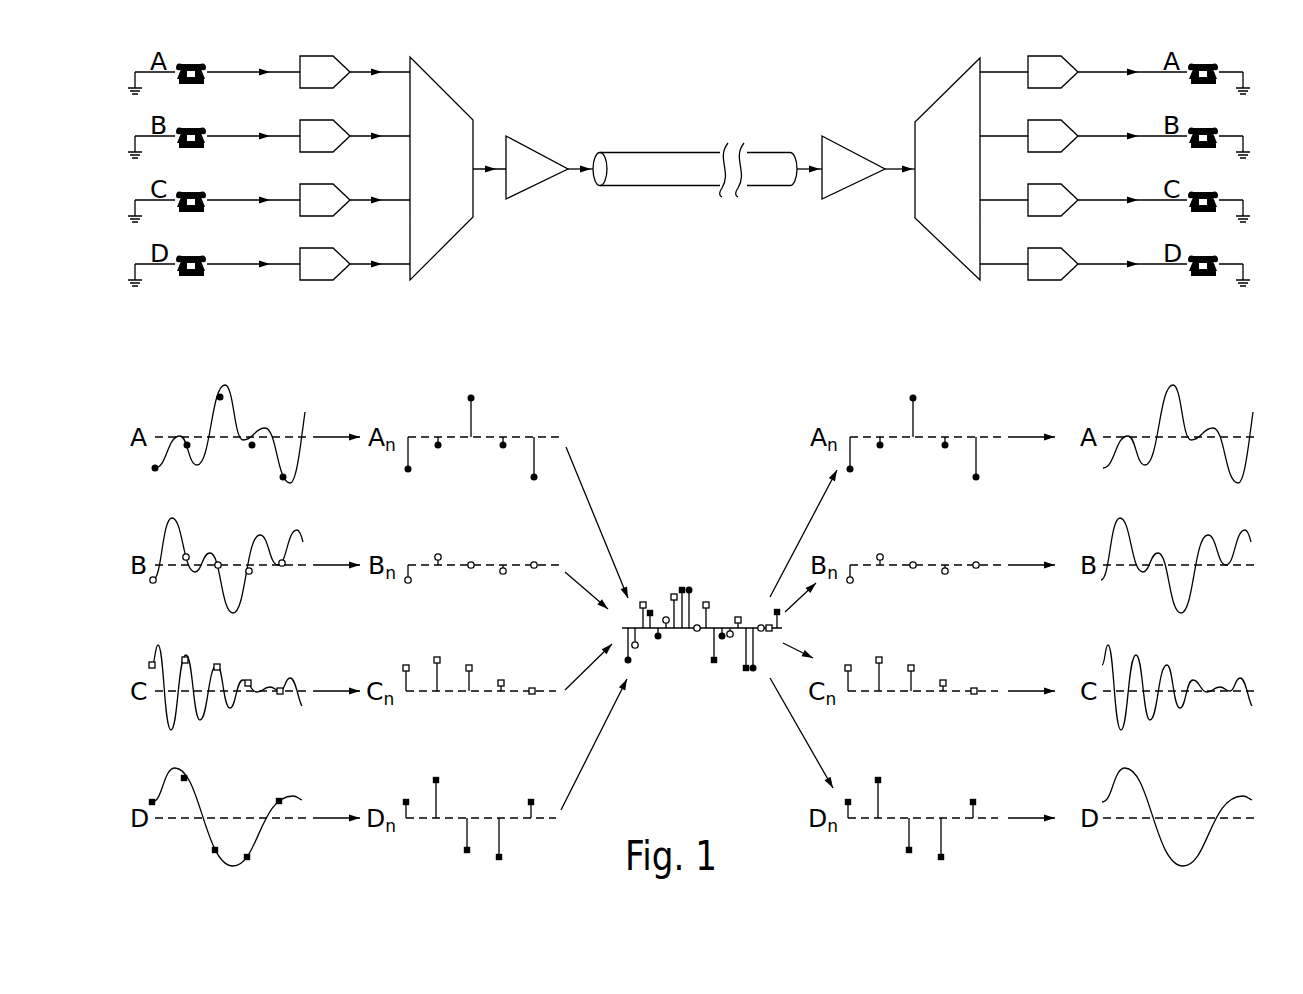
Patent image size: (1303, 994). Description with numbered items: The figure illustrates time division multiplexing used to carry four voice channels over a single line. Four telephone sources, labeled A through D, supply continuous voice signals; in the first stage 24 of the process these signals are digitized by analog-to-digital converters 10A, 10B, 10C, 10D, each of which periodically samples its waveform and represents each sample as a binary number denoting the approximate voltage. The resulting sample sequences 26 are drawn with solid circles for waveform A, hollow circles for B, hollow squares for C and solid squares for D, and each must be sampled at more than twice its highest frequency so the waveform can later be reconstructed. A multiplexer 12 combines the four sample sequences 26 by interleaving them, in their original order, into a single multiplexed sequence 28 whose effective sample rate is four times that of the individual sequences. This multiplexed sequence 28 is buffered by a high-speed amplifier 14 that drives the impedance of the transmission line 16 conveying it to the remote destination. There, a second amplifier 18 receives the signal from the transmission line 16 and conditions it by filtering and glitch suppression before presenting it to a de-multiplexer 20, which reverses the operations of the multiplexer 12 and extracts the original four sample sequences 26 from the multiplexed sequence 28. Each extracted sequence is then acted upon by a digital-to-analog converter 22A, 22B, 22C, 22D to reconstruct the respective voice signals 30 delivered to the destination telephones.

The analog-to-digital converter 10A is at (335, 82).
The analog-to-digital converter 10B is at (335, 146).
The analog-to-digital converter 10C is at (335, 210).
The analog-to-digital converter 10D is at (335, 274).
The multiplexer 12 is at (445, 128).
The high-speed amplifier 14 is at (540, 180).
The transmission line 16 is at (659, 180).
The amplifier 18 is at (856, 180).
The de-multiplexer 20 is at (966, 128).
The digital-to-analog converter 22A is at (1063, 82).
The digital-to-analog converter 22B is at (1063, 146).
The digital-to-analog converter 22C is at (1063, 210).
The digital-to-analog converter 22D is at (1063, 274).
The first stage 24 is at (230, 408).
The sample sequences 26 is at (704, 407).
The multiplexed sequence 28 is at (702, 598).
The voice signals 30 is at (1180, 408).